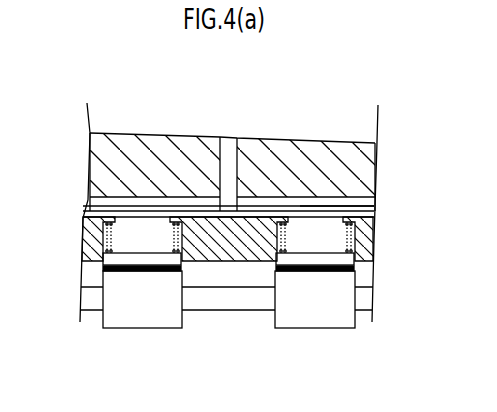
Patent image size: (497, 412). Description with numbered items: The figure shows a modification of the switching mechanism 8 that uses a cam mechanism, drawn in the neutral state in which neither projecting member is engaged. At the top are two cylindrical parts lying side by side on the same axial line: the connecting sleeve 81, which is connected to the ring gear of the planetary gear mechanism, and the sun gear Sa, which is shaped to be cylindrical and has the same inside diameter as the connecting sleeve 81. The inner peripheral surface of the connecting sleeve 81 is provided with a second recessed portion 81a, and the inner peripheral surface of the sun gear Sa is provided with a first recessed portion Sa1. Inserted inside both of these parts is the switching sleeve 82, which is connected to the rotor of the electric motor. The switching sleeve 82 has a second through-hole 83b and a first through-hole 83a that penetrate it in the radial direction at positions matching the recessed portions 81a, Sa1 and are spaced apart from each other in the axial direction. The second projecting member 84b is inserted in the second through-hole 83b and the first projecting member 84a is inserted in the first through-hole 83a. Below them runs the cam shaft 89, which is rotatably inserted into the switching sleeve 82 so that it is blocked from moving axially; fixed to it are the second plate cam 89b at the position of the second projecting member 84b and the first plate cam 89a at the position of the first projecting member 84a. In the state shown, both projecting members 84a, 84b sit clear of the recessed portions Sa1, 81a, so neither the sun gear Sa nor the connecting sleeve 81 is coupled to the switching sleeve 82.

The switching mechanism 8 is at (100, 92).
The connecting sleeve 81 is at (167, 137).
The sun gear Sa is at (307, 155).
The second recessed portion 81a is at (97, 203).
The first recessed portion Sa1 is at (378, 200).
The switching sleeve 82 is at (82, 226).
The second through-hole 83b is at (100, 243).
The first through-hole 83a is at (360, 238).
The second projecting member 84b is at (143, 237).
The first projecting member 84a is at (318, 238).
The second plate cam 89b is at (146, 314).
The cam shaft 89 is at (237, 300).
The first plate cam 89a is at (316, 314).